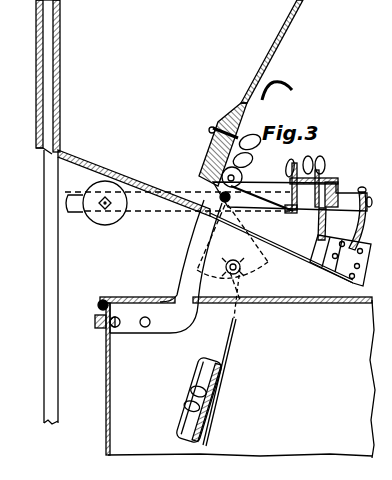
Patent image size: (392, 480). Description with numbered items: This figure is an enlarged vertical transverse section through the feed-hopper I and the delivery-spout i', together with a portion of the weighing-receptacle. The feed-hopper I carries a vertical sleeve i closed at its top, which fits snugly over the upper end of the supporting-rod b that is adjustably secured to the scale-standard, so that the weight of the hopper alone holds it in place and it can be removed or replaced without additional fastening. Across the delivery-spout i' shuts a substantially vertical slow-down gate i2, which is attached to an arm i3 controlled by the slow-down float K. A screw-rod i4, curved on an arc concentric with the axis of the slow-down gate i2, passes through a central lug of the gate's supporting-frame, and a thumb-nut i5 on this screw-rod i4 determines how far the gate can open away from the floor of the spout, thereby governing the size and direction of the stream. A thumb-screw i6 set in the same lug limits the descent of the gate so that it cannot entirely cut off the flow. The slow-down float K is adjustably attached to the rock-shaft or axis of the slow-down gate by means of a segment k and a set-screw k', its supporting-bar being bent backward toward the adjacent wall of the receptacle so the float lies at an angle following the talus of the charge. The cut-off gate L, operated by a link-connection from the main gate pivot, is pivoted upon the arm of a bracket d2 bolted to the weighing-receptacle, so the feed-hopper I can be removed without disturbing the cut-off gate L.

The feed-hopper I is at (211, 229).
The vertical sleeve i is at (63, 76).
The supporting-rod b is at (50, 287).
The arm i3 is at (247, 159).
The delivery-spout i' is at (292, 215).
The screw-rod i4 is at (264, 210).
The thumb-nut i5 is at (311, 176).
The thumb-screw i6 is at (326, 170).
The slow-down gate i2 is at (334, 224).
The cut-off gate L is at (362, 228).
The bracket d2 is at (158, 266).
The segment k is at (236, 252).
The set-screw k' is at (220, 357).
The slow-down float K is at (210, 400).